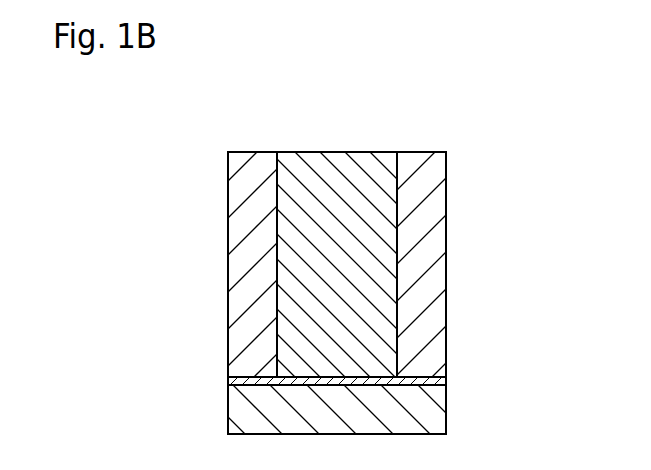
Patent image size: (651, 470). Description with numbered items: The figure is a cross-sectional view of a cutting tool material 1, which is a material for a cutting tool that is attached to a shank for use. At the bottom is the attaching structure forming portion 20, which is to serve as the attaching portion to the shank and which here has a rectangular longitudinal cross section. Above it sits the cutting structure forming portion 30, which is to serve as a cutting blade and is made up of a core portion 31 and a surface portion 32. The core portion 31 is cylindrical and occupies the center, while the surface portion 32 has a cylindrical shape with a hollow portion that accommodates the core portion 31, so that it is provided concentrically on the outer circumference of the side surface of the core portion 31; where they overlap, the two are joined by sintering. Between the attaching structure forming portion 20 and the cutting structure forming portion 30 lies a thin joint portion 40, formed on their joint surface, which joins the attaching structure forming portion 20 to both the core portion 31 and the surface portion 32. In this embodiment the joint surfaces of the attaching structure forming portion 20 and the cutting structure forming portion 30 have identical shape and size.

The cutting tool material 1 is at (485, 135).
The attaching structure forming portion 20 is at (422, 418).
The cutting structure forming portion 30 is at (512, 171).
The core portion 31 is at (360, 202).
The surface portion 32 is at (417, 229).
The joint portion 40 is at (417, 383).